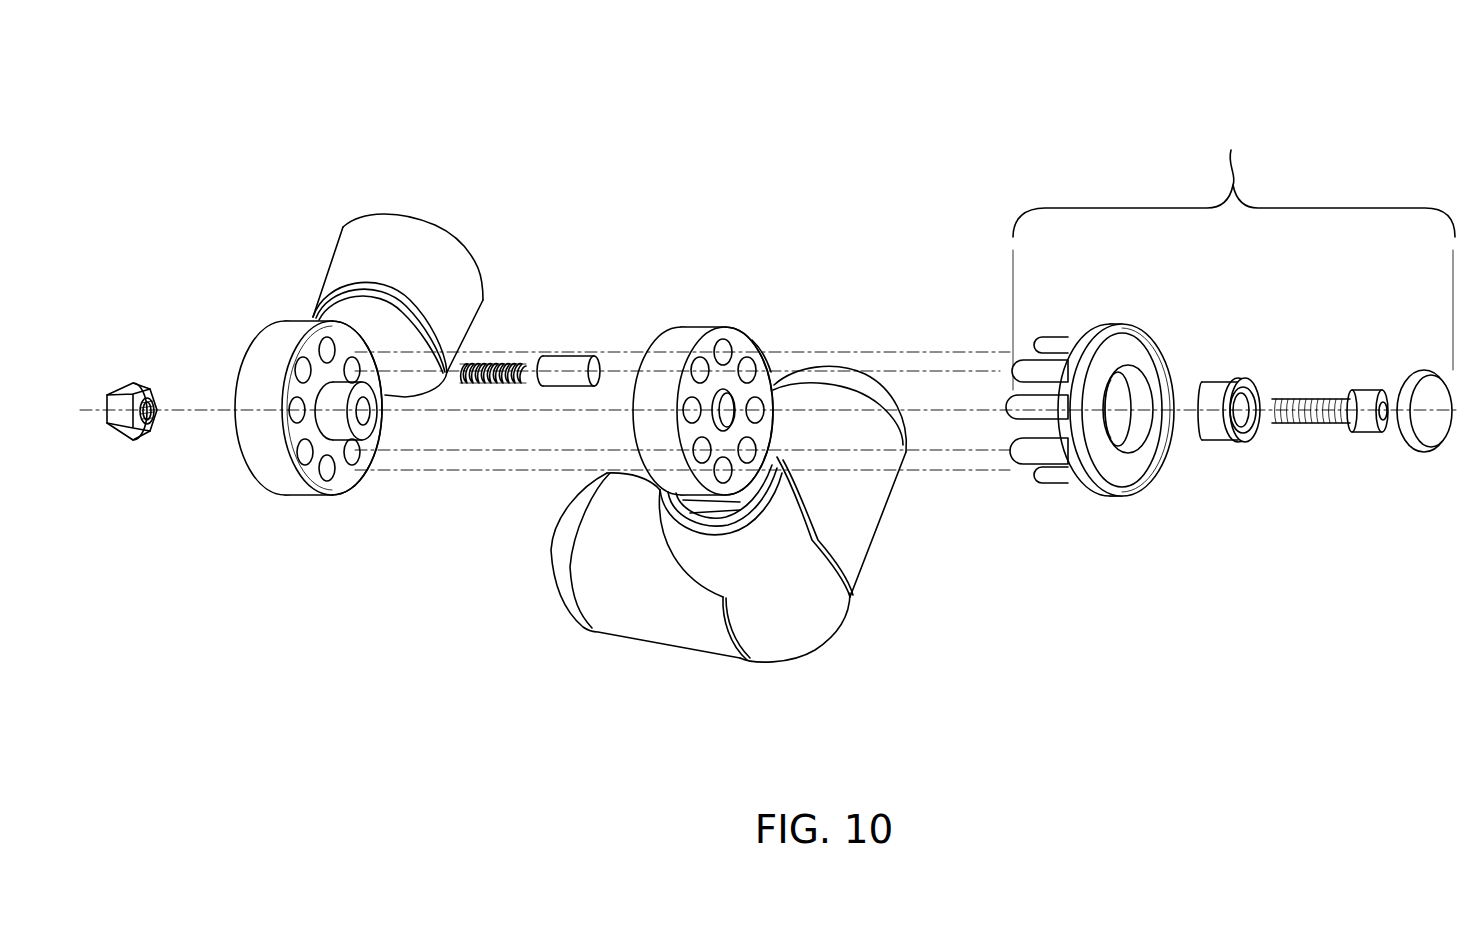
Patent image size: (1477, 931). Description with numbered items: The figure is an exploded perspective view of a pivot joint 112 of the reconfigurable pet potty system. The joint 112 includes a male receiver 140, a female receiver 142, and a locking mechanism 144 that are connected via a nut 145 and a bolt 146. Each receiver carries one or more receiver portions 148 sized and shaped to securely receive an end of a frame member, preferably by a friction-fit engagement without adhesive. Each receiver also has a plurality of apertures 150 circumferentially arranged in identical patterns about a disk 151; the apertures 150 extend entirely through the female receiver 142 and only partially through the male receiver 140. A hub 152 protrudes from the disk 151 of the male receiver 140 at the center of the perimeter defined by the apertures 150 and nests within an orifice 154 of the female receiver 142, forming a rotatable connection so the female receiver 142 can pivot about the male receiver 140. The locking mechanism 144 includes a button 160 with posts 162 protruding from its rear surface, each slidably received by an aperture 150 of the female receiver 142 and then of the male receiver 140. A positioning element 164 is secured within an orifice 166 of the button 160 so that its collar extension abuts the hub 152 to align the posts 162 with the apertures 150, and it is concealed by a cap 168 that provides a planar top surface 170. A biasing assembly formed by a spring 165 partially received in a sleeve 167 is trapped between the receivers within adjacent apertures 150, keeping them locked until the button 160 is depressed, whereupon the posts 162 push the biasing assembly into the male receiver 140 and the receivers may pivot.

The joint 112 is at (348, 92).
The male receiver 140 is at (325, 258).
The female receiver 142 is at (670, 312).
The locking mechanism 144 is at (1234, 254).
The nut 145 is at (131, 392).
The bolt 146 is at (1322, 398).
The receiver portion 148 is at (446, 233).
The apertures 150 is at (323, 342).
The disk 151 is at (344, 490).
The hub 152 is at (327, 420).
The orifice 154 is at (770, 352).
The button 160 is at (1133, 490).
The posts 162 is at (1040, 345).
The positioning element 164 is at (1210, 425).
The spring 165 is at (500, 362).
The orifice 166 is at (1130, 398).
The sleeve 167 is at (548, 354).
The cap 168 is at (1421, 465).
The planar top surface 170 is at (1430, 385).